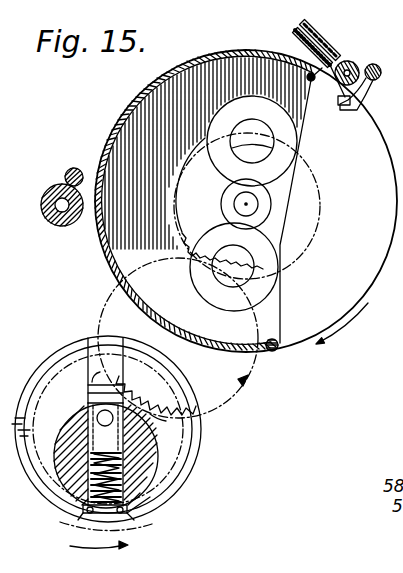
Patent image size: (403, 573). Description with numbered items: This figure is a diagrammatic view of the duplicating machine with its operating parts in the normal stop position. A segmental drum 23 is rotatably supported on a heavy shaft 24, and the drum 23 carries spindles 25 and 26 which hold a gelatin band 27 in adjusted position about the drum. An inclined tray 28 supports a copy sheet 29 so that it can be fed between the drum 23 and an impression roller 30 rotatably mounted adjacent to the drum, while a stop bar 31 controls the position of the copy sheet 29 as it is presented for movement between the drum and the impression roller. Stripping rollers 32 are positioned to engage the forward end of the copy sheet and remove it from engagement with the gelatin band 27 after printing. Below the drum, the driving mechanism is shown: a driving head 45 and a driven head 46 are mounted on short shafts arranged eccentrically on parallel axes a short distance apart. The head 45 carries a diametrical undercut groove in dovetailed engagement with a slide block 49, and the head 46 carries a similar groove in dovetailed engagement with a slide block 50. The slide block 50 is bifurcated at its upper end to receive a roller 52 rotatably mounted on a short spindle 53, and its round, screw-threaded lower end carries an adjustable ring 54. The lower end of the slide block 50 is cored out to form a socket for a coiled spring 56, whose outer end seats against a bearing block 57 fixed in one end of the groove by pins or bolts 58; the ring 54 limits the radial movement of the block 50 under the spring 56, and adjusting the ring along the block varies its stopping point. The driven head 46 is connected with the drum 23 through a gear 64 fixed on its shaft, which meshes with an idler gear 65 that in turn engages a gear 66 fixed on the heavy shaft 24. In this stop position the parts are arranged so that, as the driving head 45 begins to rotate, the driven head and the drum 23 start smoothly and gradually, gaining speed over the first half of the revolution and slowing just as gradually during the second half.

The segmental drum 23 is at (204, 200).
The heavy shaft 24 is at (250, 204).
The spindle 25 is at (245, 122).
The spindle 26 is at (230, 248).
The gelatin band 27 is at (246, 201).
The inclined tray 28 is at (298, 37).
The copy sheet 29 is at (300, 24).
The impression roller 30 is at (343, 64).
The stop bar 31 is at (352, 98).
The stripping rollers 32 is at (66, 171).
The head 45 is at (204, 428).
The head 46 is at (108, 429).
The slide block 49 is at (97, 380).
The slide block 50 is at (92, 398).
The roller 52 is at (118, 374).
The short spindle 53 is at (158, 418).
The ring 54 is at (168, 505).
The coiled spring 56 is at (156, 512).
The bearing block 57 is at (112, 512).
The pins or bolts 58 is at (86, 515).
The gear 64 is at (178, 464).
The idler gear 65 is at (100, 312).
The gear 66 is at (172, 178).